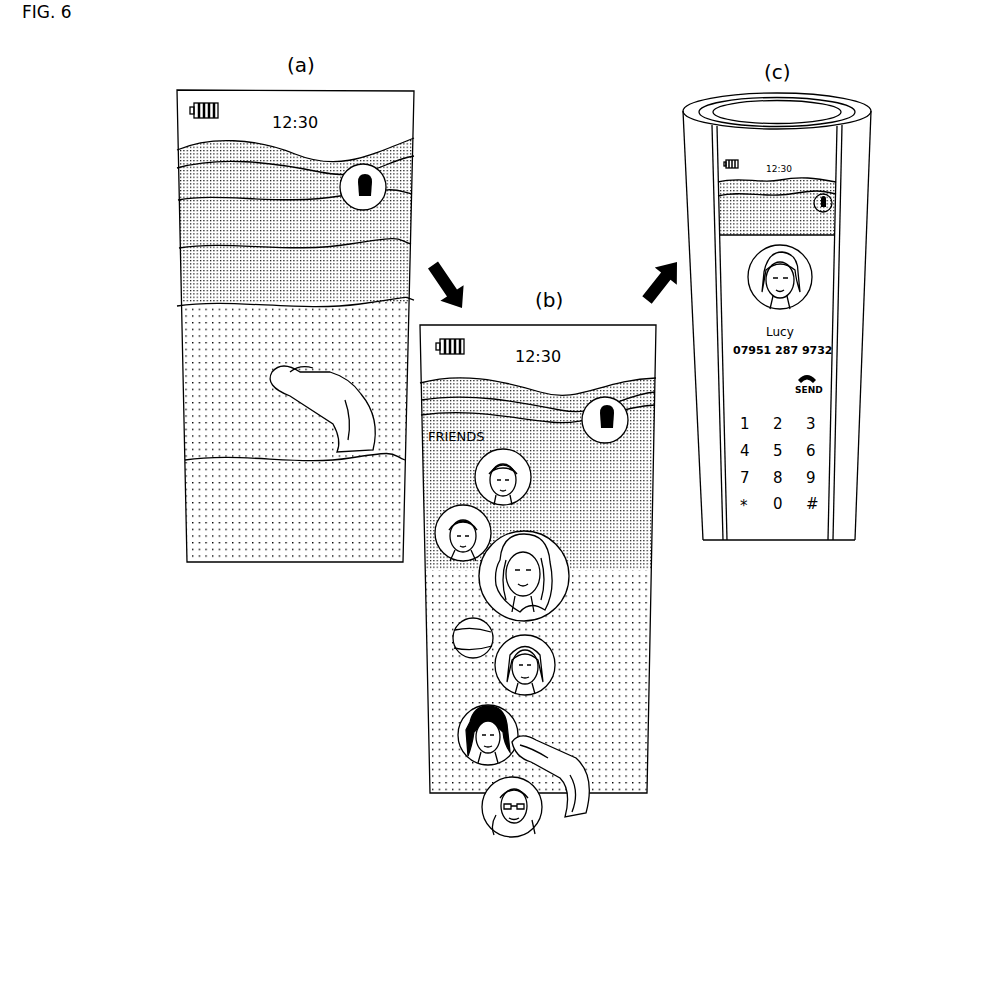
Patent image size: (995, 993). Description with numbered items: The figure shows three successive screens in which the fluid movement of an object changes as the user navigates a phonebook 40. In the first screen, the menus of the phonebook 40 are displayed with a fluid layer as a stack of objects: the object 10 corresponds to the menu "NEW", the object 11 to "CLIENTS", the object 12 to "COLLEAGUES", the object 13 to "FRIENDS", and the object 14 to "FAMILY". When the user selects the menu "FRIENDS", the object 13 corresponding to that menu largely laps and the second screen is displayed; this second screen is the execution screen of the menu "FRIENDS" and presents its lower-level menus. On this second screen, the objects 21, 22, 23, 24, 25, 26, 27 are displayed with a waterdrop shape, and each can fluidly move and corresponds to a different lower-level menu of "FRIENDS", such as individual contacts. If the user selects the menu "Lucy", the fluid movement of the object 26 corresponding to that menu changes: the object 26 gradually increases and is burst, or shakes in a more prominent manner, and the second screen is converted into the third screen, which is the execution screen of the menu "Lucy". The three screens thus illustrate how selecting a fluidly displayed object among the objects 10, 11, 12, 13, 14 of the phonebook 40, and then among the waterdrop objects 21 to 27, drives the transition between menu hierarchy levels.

The object 10 is at (193, 180).
The object 11 is at (198, 227).
The object 12 is at (197, 280).
The object 13 is at (203, 365).
The object 14 is at (203, 482).
The object 21 is at (540, 485).
The object 22 is at (441, 555).
The object 23 is at (484, 585).
The object 24 is at (454, 637).
The object 25 is at (497, 668).
The object 26 is at (460, 738).
The object 27 is at (483, 807).
The phonebook 40 is at (386, 187).